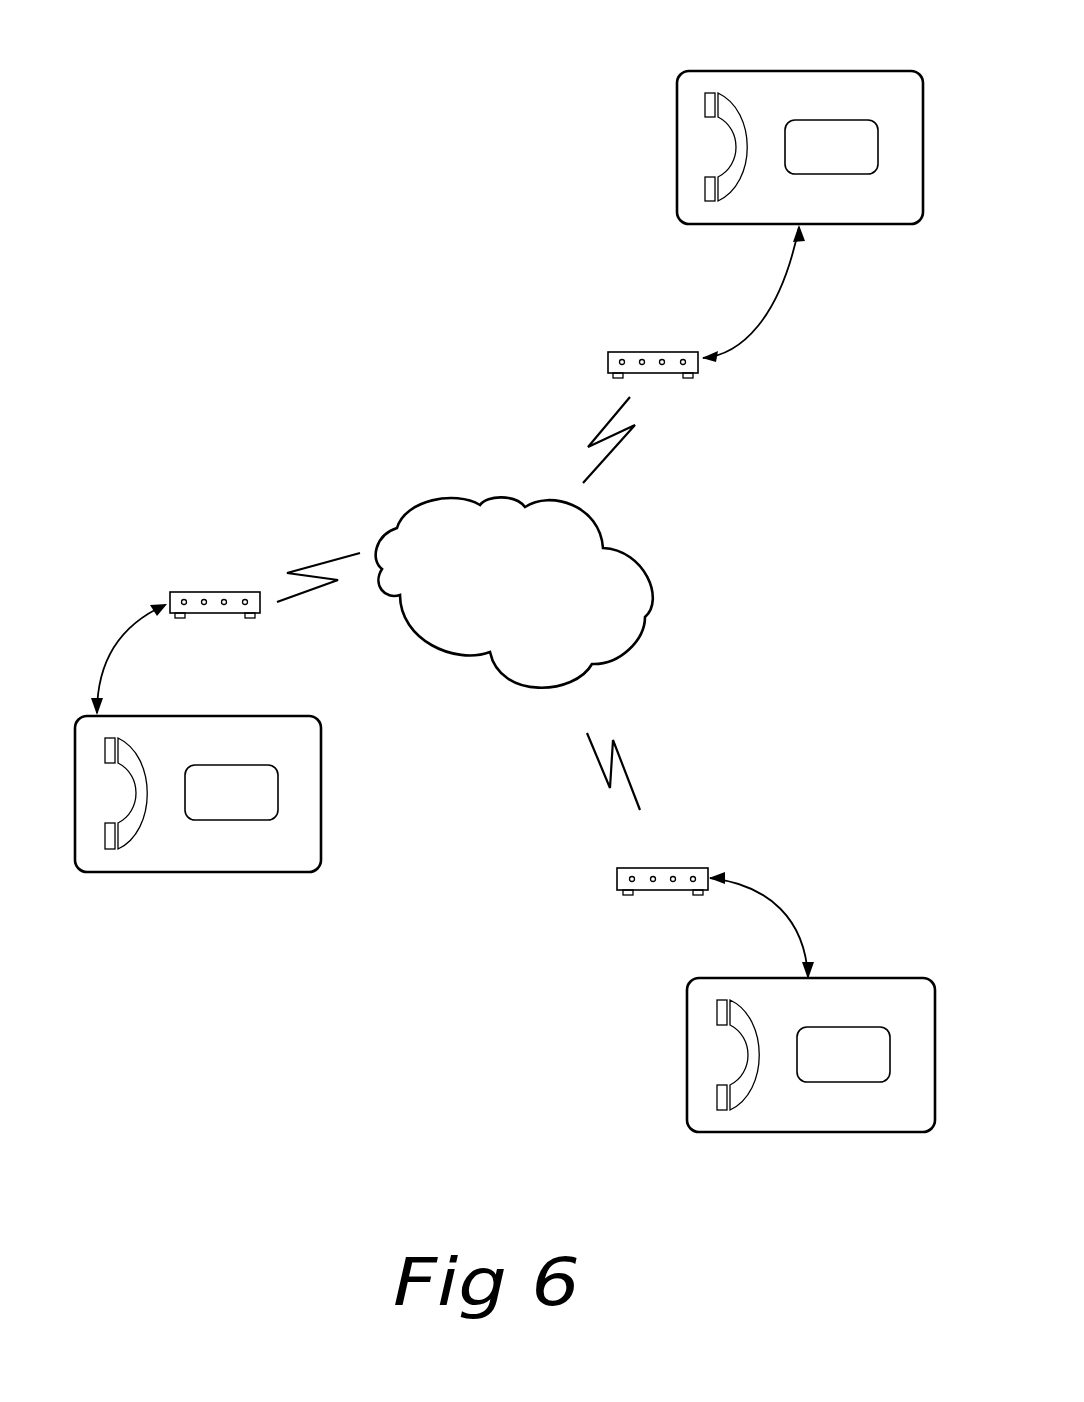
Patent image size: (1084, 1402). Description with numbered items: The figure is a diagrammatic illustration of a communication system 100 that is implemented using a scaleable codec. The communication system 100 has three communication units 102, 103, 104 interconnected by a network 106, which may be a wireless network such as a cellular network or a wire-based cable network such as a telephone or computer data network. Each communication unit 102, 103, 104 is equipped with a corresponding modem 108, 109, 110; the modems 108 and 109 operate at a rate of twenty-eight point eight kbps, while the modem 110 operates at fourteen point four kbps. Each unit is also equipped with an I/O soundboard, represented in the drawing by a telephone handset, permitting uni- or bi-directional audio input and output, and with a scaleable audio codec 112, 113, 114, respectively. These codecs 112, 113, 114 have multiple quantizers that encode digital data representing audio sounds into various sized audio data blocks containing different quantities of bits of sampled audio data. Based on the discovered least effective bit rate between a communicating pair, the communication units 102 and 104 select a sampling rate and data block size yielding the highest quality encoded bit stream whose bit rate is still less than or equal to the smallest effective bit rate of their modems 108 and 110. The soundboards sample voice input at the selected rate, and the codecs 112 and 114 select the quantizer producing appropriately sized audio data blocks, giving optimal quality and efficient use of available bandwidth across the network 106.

The communication system 100 is at (427, 368).
The communication unit 102 is at (237, 828).
The communication unit 103 is at (811, 1053).
The communication unit 104 is at (800, 143).
The network 106 is at (622, 638).
The modem 108 is at (197, 615).
The modem 109 is at (660, 892).
The modem 110 is at (655, 375).
The scaleable audio codec 112 is at (278, 793).
The scaleable audio codec 113 is at (843, 1027).
The scaleable audio codec 114 is at (832, 118).